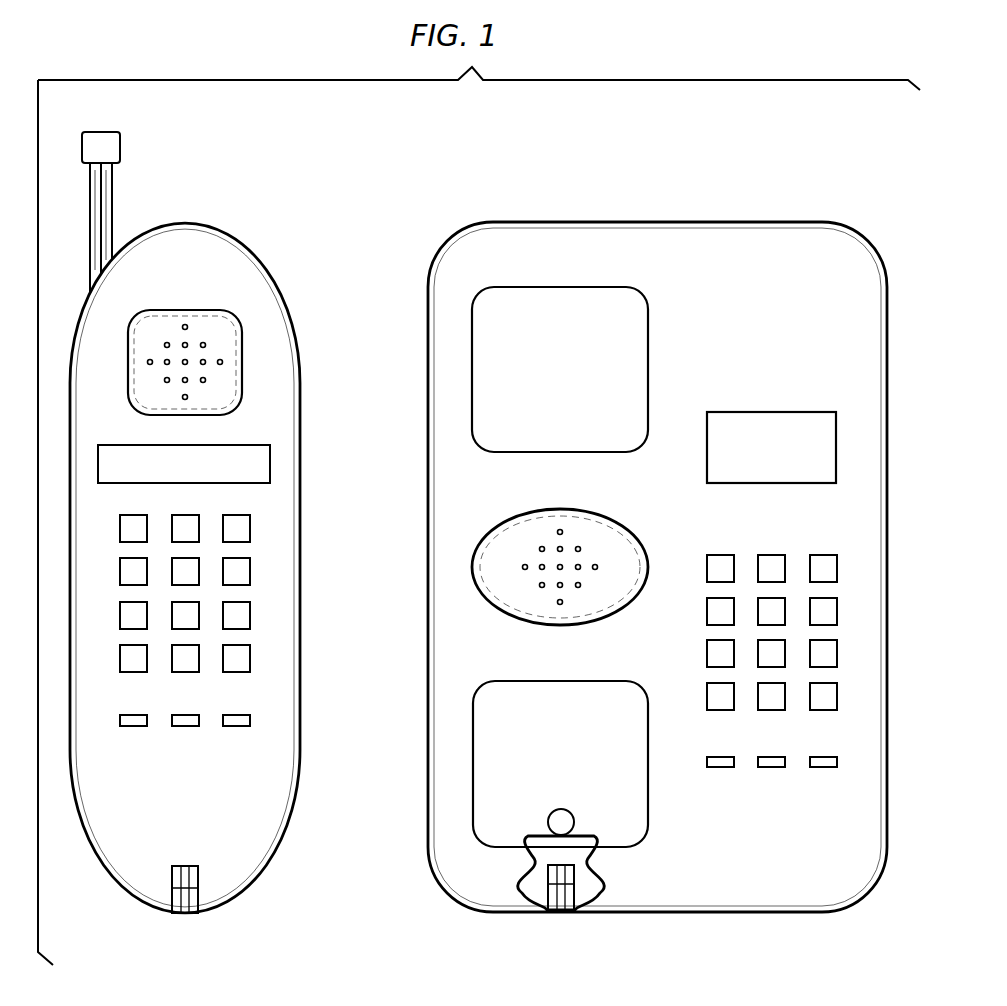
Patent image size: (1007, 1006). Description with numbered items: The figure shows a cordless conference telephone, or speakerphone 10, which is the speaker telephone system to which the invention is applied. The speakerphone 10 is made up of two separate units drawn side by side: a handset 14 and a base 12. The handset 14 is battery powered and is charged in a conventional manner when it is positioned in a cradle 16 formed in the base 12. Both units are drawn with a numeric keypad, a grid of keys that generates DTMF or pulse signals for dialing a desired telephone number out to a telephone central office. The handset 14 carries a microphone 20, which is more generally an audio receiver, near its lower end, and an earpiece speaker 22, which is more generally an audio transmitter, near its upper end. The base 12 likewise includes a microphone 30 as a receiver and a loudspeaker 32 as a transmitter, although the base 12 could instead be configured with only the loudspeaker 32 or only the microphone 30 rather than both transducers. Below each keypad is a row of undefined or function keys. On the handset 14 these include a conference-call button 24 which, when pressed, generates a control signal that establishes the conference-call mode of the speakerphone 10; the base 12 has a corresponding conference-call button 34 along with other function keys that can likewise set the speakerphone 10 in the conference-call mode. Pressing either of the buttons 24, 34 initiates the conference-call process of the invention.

The speakerphone 10 is at (428, 934).
The base 12 is at (692, 222).
The handset 14 is at (258, 255).
The cradle 16 is at (558, 681).
The microphone 20 is at (184, 866).
The earpiece speaker 22 is at (180, 310).
The conference-call button 24 is at (128, 727).
The microphone 30 is at (556, 913).
The loudspeaker 32 is at (630, 530).
The conference-call button 34 is at (716, 768).